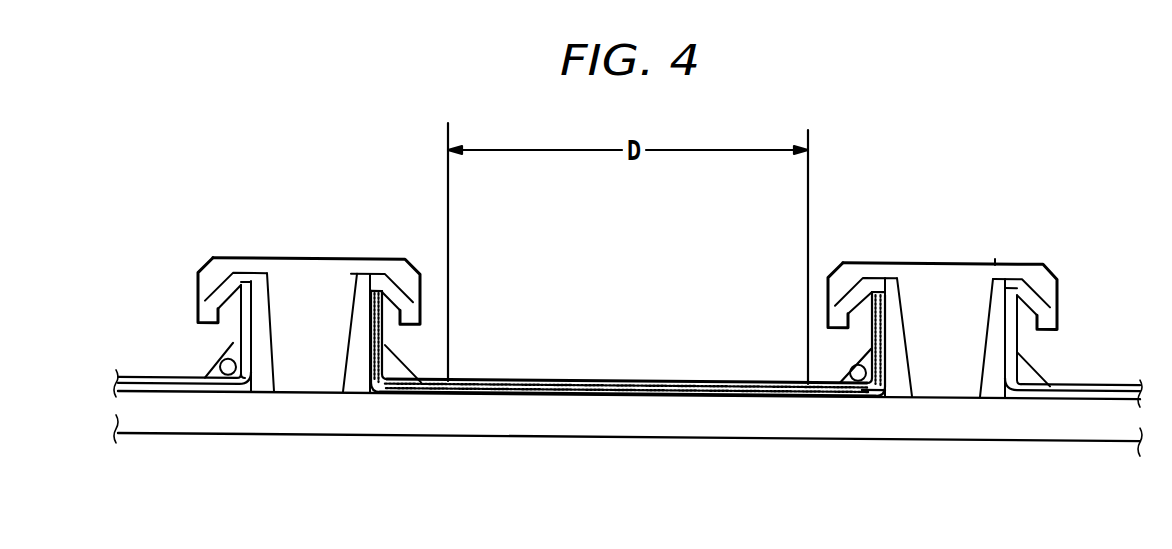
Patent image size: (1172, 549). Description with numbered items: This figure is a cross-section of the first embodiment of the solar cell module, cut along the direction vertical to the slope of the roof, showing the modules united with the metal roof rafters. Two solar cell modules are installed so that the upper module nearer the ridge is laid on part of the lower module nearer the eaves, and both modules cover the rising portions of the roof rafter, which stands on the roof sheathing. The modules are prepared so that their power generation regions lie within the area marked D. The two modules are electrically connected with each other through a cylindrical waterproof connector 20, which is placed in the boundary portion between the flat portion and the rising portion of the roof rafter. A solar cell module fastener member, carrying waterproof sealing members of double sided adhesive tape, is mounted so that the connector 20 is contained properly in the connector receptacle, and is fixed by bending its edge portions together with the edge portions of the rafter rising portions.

The connector 20 is at (868, 399).